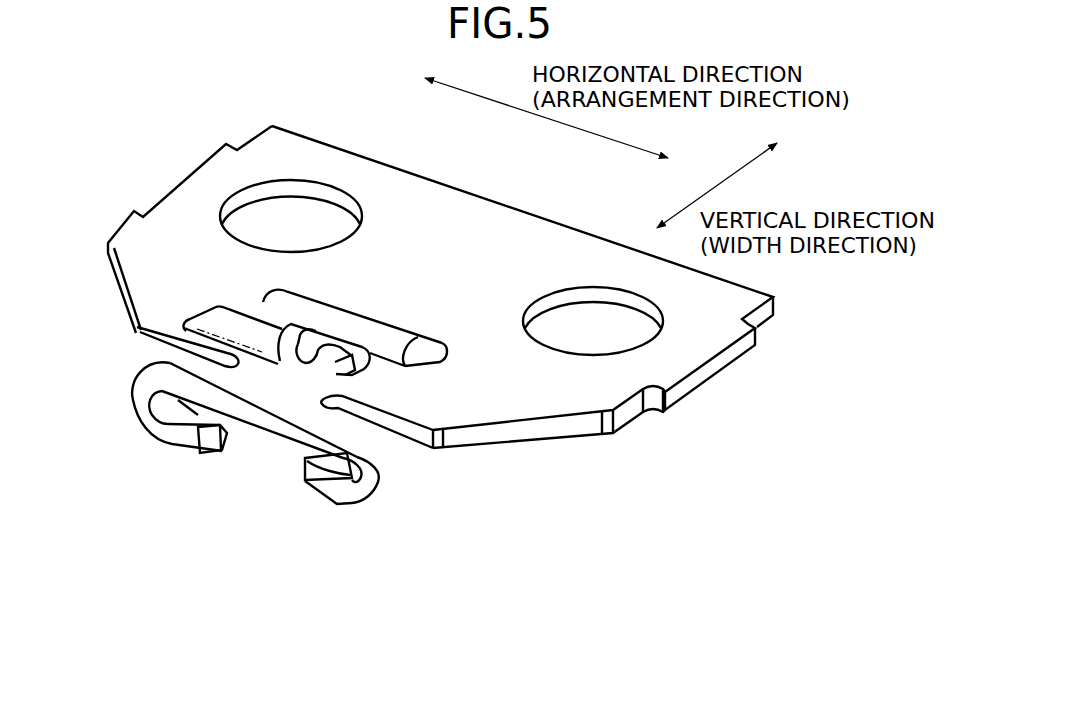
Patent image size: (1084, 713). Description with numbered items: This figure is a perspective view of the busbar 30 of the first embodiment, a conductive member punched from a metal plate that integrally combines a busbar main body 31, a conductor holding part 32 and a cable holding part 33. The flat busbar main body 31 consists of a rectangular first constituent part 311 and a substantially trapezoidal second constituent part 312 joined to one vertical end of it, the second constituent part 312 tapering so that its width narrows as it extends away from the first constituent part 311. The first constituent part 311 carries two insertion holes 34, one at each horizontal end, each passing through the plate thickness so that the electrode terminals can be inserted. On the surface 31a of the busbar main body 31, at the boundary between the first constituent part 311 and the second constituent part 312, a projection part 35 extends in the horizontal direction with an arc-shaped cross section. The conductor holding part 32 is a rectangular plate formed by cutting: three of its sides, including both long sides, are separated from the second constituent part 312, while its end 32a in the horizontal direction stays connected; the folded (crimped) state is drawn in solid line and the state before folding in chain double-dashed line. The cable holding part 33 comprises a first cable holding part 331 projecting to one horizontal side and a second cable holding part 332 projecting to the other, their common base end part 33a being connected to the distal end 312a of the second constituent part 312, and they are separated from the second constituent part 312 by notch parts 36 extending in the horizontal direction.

The busbar 30 is at (165, 152).
The busbar main body 31 is at (827, 405).
The surface of busbar main body 31a is at (283, 160).
The first constituent part 311 is at (714, 369).
The second constituent part 312 is at (572, 432).
The distal end of second constituent part 312a is at (413, 432).
The conductor holding part 32 is at (357, 330).
The end of conductor holding part 32a is at (260, 338).
The cable holding part 33 is at (407, 553).
The base end part 33a is at (262, 415).
The first cable holding part 331 is at (140, 425).
The second cable holding part 332 is at (378, 474).
The insertion holes 34 is at (310, 227).
The projection part 35 is at (436, 350).
The notch parts 36 is at (140, 322).